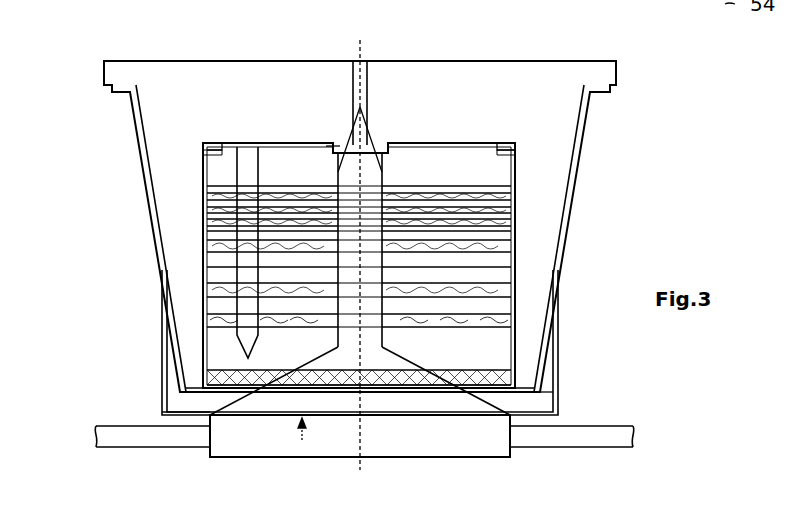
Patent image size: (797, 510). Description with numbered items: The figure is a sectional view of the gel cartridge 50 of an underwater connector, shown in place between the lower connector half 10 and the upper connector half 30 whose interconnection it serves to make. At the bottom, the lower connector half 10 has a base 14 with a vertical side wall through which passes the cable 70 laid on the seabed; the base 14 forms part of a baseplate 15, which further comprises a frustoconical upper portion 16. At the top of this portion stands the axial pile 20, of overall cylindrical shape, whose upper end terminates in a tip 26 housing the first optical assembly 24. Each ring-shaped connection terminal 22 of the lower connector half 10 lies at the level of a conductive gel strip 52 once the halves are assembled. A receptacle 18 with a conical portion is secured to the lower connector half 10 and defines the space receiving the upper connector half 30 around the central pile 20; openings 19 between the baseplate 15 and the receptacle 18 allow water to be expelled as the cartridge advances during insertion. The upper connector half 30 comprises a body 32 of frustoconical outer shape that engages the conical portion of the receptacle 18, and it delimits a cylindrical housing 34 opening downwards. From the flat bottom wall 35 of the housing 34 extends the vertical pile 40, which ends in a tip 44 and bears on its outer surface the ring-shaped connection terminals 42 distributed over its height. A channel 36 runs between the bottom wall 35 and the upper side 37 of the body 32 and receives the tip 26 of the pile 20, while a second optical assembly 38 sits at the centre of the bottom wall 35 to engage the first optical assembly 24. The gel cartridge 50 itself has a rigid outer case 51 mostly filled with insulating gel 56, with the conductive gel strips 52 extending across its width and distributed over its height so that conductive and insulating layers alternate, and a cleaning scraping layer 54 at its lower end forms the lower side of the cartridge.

The lower connector half 10 is at (352, 418).
The base 14 is at (433, 443).
The baseplate 15 is at (303, 438).
The frustoconical upper portion 16 is at (222, 353).
The receptacle 18 is at (156, 250).
The openings 19 is at (176, 418).
The pile 20 is at (430, 168).
The ring-shaped connection terminal 22 is at (378, 349).
The first optical assembly 24 is at (374, 150).
The tip 26 is at (370, 130).
The upper connector half 30 is at (333, 198).
The body 32 is at (574, 121).
The housing 34 is at (539, 243).
The bottom wall 35 is at (302, 141).
The channel 36 is at (353, 62).
The upper side 37 is at (100, 54).
The second optical assembly 38 is at (340, 144).
The pile 40 is at (246, 163).
The ring-shaped connection terminals 42 is at (246, 323).
The tip 44 is at (271, 342).
The gel cartridge 50 is at (497, 164).
The rigid outer case 51 is at (515, 184).
The conductive gel strips 52 is at (522, 318).
The cleaning scraping layer 54 is at (555, 392).
The insulating gel 56 is at (515, 374).
The cable 70 is at (125, 437).